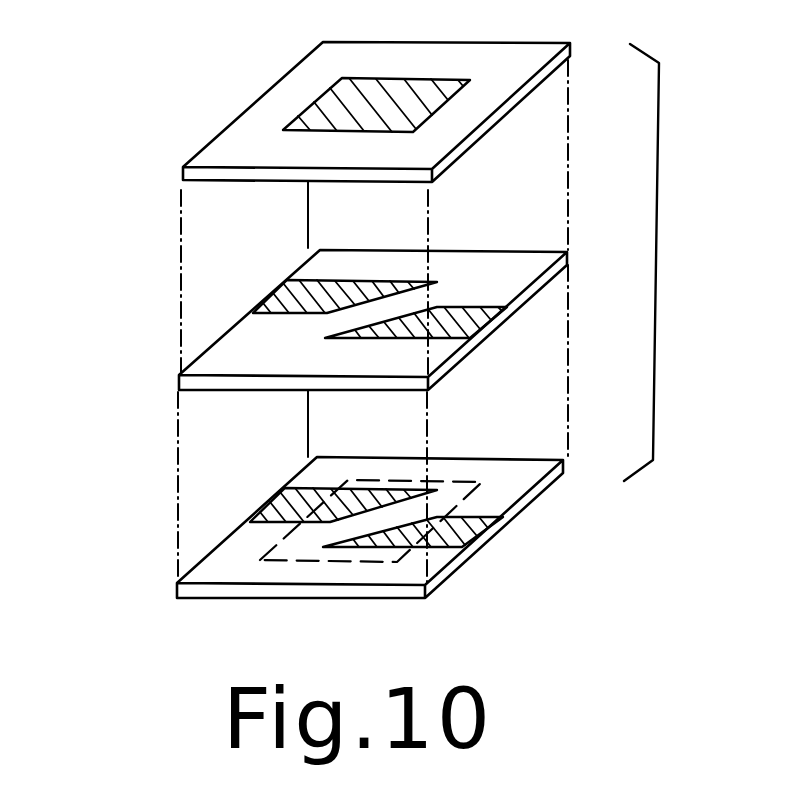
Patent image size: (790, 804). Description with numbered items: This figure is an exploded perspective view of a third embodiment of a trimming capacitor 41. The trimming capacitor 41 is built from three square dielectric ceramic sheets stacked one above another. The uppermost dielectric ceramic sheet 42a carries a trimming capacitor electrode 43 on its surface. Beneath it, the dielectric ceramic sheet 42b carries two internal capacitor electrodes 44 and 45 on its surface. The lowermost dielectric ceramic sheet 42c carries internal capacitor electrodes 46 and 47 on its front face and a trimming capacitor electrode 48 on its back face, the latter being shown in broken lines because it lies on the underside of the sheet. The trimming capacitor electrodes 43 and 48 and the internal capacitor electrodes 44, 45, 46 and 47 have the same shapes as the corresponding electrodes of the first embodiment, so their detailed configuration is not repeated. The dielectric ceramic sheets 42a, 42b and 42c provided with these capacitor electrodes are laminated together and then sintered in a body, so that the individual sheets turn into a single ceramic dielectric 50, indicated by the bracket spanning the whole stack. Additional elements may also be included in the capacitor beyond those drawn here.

The trimming capacitor 41 is at (63, 130).
The dielectric ceramic sheet 42a is at (507, 113).
The dielectric ceramic sheet 42b is at (475, 250).
The dielectric ceramic sheet 42c is at (448, 458).
The trimming capacitor electrode 43 is at (407, 87).
The internal capacitor electrode 44 is at (340, 297).
The internal capacitor electrode 45 is at (463, 312).
The internal capacitor electrode 46 is at (310, 500).
The internal capacitor electrode 47 is at (473, 517).
The trimming capacitor electrode 48 is at (295, 562).
The ceramic dielectric 50 is at (665, 262).